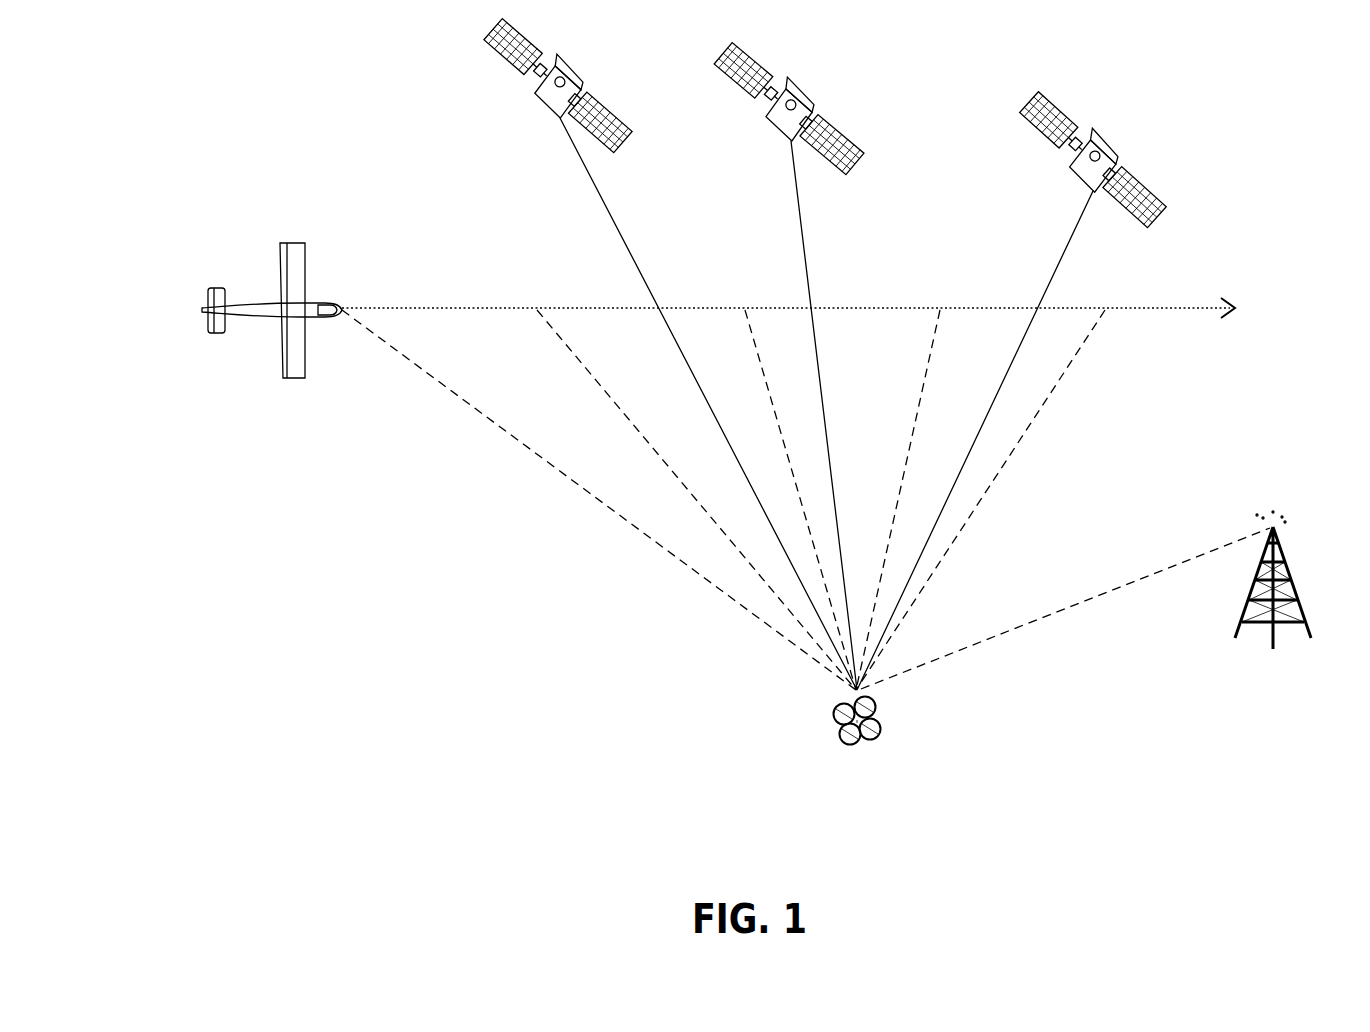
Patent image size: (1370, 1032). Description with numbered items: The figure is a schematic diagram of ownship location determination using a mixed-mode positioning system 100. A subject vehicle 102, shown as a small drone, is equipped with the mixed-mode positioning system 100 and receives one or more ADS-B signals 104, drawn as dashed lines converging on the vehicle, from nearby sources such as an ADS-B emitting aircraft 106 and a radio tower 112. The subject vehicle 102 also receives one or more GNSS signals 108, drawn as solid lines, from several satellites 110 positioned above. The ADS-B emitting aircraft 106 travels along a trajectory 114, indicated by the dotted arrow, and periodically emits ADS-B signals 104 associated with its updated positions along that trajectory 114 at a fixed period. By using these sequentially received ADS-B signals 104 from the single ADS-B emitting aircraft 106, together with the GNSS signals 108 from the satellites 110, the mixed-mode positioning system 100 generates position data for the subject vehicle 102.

The mixed-mode positioning system 100 is at (915, 731).
The subject vehicle 102 is at (833, 745).
The ADS-B signals 104 is at (763, 405).
The ADS-B emitting aircraft 106 is at (207, 282).
The GNSS signals 108 is at (612, 218).
The satellites 110 is at (613, 67).
The radio towers 112 is at (1282, 503).
The trajectory 114 is at (1197, 302).